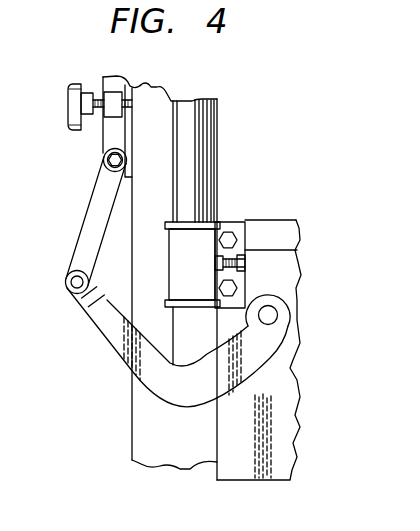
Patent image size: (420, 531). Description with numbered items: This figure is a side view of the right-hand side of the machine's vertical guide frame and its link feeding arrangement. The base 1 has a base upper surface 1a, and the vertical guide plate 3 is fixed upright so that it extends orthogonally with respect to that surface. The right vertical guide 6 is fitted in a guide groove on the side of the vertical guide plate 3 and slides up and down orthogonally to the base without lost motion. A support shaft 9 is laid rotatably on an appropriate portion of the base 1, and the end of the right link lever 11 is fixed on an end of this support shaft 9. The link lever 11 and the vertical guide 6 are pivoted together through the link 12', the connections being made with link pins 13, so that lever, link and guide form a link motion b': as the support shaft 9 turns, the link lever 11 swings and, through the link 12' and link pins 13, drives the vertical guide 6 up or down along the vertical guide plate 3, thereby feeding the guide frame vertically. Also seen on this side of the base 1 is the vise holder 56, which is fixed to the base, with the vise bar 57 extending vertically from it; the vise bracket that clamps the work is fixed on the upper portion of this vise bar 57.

The base 1 is at (299, 379).
The base upper surface 1a is at (290, 218).
The vertical guide plate 3 is at (131, 420).
The vertical guide 6 is at (102, 86).
The support shaft 9 is at (272, 313).
The link lever 11 is at (112, 341).
The link 12' is at (83, 221).
The link pin 13 is at (108, 162).
The vise holder 56 is at (170, 242).
The vise bar 57 is at (200, 133).
The link motion b' is at (64, 332).